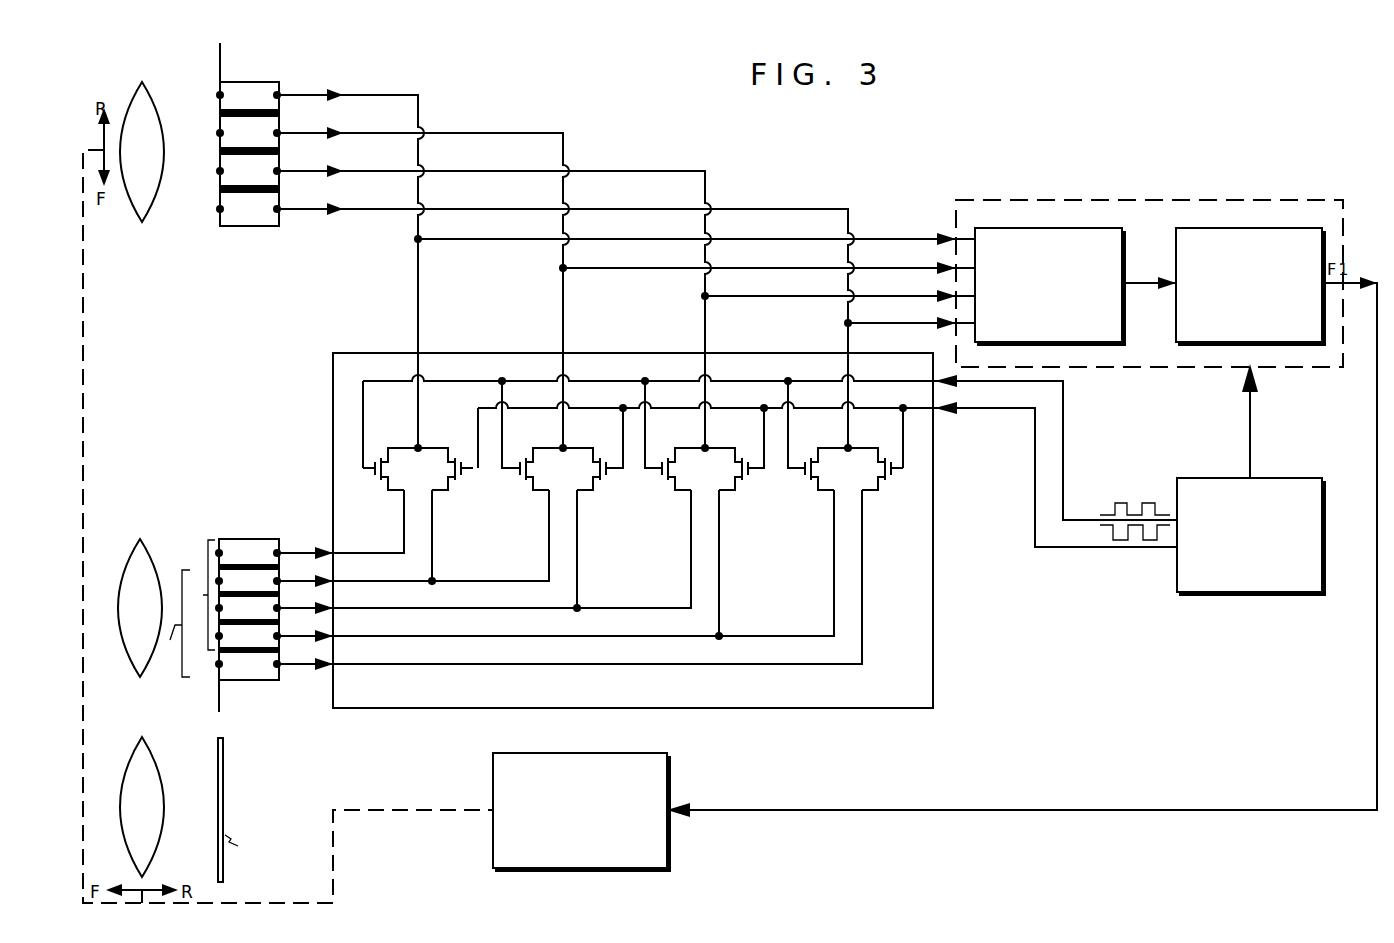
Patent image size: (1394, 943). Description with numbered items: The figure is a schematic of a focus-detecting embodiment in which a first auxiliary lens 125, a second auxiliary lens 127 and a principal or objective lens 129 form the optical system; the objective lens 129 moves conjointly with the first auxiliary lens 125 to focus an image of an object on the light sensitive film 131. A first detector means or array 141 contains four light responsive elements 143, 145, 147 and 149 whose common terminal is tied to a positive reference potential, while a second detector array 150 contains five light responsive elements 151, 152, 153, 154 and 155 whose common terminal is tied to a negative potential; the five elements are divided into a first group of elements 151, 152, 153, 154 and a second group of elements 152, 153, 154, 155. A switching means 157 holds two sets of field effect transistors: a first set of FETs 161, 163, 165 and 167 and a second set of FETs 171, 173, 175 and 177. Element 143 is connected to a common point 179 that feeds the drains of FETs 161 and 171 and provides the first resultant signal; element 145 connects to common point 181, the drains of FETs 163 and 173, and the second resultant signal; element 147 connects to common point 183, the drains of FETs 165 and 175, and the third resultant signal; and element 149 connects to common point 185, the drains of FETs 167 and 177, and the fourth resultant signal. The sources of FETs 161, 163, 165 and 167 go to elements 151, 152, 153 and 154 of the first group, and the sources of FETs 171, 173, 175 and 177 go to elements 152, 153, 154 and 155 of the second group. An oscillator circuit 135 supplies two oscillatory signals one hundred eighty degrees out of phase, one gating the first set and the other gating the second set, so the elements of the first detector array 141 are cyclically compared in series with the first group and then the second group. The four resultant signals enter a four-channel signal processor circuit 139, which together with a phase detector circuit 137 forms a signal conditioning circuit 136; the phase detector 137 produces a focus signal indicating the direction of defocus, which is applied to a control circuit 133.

The first auxiliary lens 125 is at (157, 143).
The second auxiliary lens 127 is at (153, 597).
The principal or objective lens 129 is at (155, 799).
The light sensitive film 131 is at (253, 810).
The control circuit 133 is at (606, 811).
The oscillator circuit 135 is at (1273, 479).
The signal conditioning circuit 136 is at (1149, 266).
The phase detector circuit 137 is at (1250, 275).
The signal processor circuit 139 is at (1049, 275).
The first detector means or array 141 is at (270, 128).
The light responsive element 143 is at (248, 95).
The light responsive element 145 is at (248, 133).
The light responsive element 147 is at (248, 171).
The light responsive element 149 is at (248, 209).
The second detector array or means 150 is at (230, 606).
The light responsive element 151 is at (248, 553).
The light responsive element 152 is at (248, 581).
The light responsive element 153 is at (248, 608).
The light responsive element 154 is at (248, 636).
The light responsive element 155 is at (248, 664).
The switching means 157 is at (728, 530).
The field effect transistor 161 is at (390, 453).
The field effect transistor 163 is at (531, 453).
The field effect transistor 165 is at (675, 453).
The field effect transistor 167 is at (818, 453).
The field effect transistor 171 is at (452, 467).
The field effect transistor 173 is at (593, 467).
The field effect transistor 175 is at (734, 467).
The field effect transistor 177 is at (877, 467).
The common point 179 is at (627, 268).
The common point 181 is at (627, 287).
The common point 183 is at (627, 306).
The common point 185 is at (627, 325).